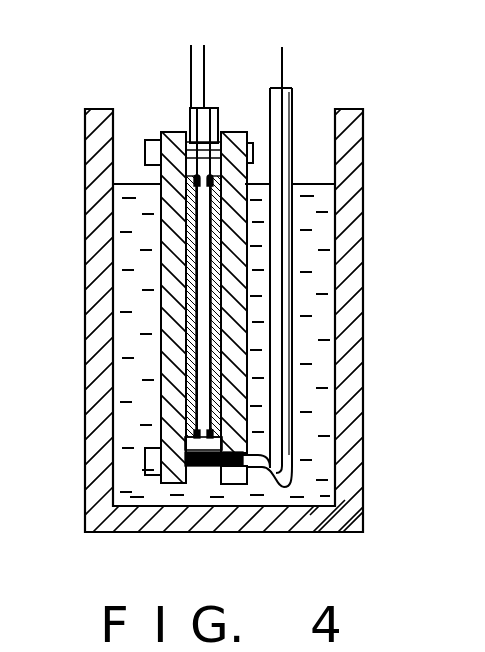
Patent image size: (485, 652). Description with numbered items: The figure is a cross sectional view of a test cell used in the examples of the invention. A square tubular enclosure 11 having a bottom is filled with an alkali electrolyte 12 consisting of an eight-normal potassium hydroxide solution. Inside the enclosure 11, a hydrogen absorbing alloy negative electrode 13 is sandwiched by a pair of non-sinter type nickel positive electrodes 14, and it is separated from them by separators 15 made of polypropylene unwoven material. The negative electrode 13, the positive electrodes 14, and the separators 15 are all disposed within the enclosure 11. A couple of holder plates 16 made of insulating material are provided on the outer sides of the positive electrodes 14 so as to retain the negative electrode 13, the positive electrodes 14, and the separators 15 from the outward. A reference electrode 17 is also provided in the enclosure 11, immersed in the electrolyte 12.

The square tubular enclosure 11 is at (350, 345).
The alkali electrolyte 12 is at (323, 306).
The hydrogen absorbing alloy negative electrode 13 is at (193, 243).
The non-sinter type nickel positive electrode 14 is at (192, 268).
The separator 15 is at (198, 421).
The holder plate 16 is at (188, 410).
The reference electrode 17 is at (285, 232).